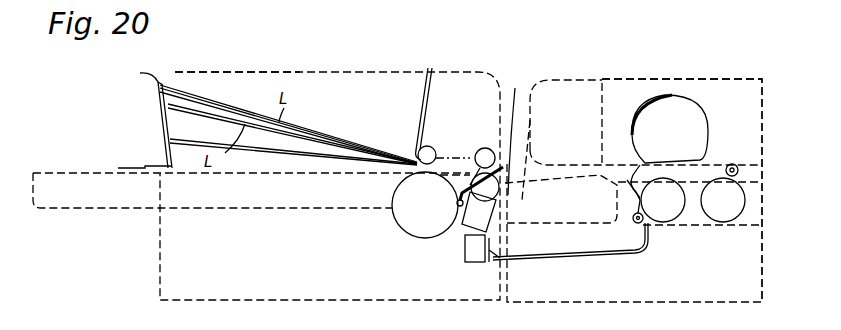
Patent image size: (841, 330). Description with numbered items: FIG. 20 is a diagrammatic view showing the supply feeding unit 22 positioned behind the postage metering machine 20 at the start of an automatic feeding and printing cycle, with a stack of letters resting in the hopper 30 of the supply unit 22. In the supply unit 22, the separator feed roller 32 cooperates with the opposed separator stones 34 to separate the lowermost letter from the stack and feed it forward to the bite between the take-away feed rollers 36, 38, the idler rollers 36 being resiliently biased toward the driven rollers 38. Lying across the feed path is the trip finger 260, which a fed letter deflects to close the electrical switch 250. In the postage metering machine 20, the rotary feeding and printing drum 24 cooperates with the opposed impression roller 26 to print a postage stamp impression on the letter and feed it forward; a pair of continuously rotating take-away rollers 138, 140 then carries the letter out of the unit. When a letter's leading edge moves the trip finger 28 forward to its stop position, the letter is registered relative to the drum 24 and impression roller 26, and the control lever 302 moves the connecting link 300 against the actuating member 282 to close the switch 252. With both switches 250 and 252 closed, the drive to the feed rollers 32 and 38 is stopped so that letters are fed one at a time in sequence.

The postage metering machine 20 is at (652, 72).
The supply unit 22 is at (287, 63).
The feeding and printing drum 24 is at (695, 122).
The impression roller 26 is at (675, 215).
The trip finger 28 is at (640, 165).
The hopper 30 is at (228, 88).
The separator feed roller 32 is at (412, 224).
The separator stones 34 is at (432, 147).
The idler take-away feed rollers 36 is at (485, 147).
The driven take-away feed rollers 38 is at (497, 190).
The take-away roller 138 is at (745, 152).
The take-away roller 140 is at (733, 217).
The electrical switch 250 is at (470, 220).
The switch 252 is at (476, 262).
The trip finger 260 is at (512, 129).
The actuating member 282 is at (500, 258).
The connecting link 300 is at (603, 256).
The control lever 302 is at (650, 225).